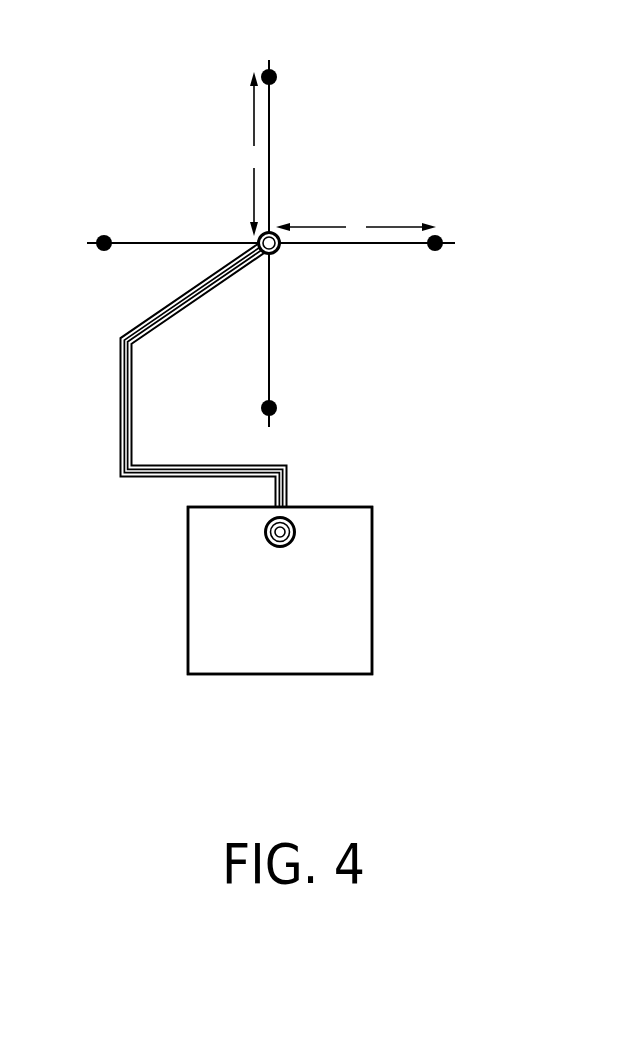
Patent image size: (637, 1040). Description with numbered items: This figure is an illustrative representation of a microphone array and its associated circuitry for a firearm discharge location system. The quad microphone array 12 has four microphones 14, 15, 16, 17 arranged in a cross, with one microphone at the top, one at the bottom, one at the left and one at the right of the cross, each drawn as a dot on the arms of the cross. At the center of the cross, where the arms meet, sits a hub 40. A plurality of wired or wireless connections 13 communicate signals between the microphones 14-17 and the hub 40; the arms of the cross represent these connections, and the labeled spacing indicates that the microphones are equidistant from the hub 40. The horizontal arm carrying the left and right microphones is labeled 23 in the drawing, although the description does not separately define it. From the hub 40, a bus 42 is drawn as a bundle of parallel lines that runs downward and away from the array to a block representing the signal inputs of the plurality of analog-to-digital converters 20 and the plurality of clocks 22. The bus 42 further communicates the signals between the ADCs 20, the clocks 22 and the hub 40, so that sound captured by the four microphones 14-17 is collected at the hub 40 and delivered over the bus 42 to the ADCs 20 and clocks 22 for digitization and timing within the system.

The microphone array 12 is at (125, 122).
The connections 13 is at (271, 175).
The microphone 14 is at (102, 252).
The microphone 15 is at (276, 412).
The microphone 16 is at (437, 255).
The microphone 17 is at (278, 77).
The horizontal axis 23 is at (138, 243).
The hub 40 is at (287, 253).
The bus 42 is at (120, 408).
The analog-to-digital converters 20 is at (372, 583).
The clocks 22 is at (280, 590).